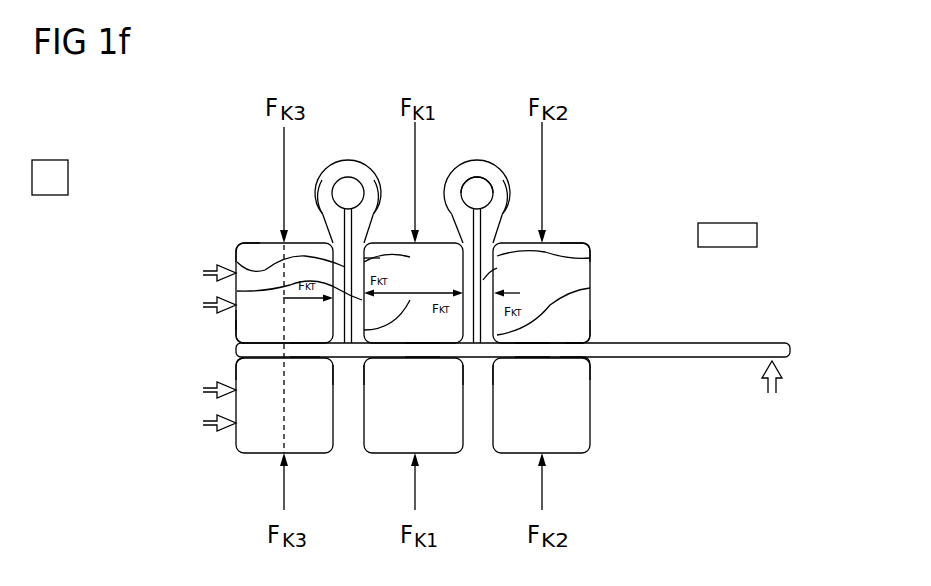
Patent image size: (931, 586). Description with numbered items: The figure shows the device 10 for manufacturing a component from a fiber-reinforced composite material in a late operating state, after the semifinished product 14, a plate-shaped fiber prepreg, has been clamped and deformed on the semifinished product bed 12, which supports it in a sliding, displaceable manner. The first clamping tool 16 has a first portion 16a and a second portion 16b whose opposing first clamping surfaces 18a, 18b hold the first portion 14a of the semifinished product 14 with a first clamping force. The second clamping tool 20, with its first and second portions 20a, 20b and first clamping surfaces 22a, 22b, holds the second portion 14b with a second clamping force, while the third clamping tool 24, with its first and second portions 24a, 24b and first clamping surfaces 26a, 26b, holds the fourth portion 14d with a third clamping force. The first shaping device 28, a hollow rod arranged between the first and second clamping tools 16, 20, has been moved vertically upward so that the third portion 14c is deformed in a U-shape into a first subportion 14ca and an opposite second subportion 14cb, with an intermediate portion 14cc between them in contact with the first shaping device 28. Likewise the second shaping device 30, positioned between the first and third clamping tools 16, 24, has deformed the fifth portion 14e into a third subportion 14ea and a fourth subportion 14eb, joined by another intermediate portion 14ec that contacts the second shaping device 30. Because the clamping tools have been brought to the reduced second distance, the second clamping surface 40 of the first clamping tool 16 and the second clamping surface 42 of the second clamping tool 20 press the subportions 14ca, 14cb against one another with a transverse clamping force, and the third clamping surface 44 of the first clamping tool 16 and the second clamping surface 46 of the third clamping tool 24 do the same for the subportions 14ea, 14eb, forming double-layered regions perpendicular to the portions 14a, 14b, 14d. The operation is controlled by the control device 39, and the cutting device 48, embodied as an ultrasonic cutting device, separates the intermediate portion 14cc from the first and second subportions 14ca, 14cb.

The device 10 is at (636, 166).
The semifinished product bed 12 is at (800, 372).
The semifinished product 14 is at (777, 342).
The first portion of the semifinished product 14a is at (423, 360).
The second portion of the semifinished product 14b is at (532, 357).
The third portion of the semifinished product 14c is at (492, 167).
The first subportion 14ca is at (568, 258).
The second subportion 14cb is at (590, 286).
The intermediate portion 14cc is at (478, 176).
The fourth portion of the semifinished product 14d is at (303, 345).
The fifth portion of the semifinished product 14e is at (363, 162).
The third subportion 14ea is at (247, 263).
The fourth subportion 14eb is at (237, 291).
The intermediate portion 14ec is at (328, 170).
The first clamping tool 16 is at (426, 230).
The first portion of the first clamping tool 16a is at (400, 232).
The second portion of the first clamping tool 16b is at (443, 450).
The first clamping surface of the first clamping tool 18a is at (472, 375).
The first clamping surface of the first clamping tool 18b is at (393, 350).
The second clamping tool 20 is at (576, 230).
The first portion of the second clamping tool 20a is at (590, 253).
The second portion of the second clamping tool 20b is at (580, 438).
The first clamping surface of the second clamping tool 22a is at (588, 330).
The first clamping surface of the second clamping tool 22b is at (570, 355).
The third clamping tool 24 is at (297, 230).
The first portion of the third clamping tool 24a is at (248, 243).
The second portion of the third clamping tool 24b is at (313, 440).
The first clamping surface of the third clamping tool 26a is at (237, 337).
The first clamping surface of the third clamping tool 26b is at (237, 357).
The first shaping device 28 is at (475, 162).
The second shaping device 30 is at (347, 160).
The control device 39 is at (53, 197).
The second clamping surface of the first clamping tool 40 is at (455, 338).
The second clamping surface of the second clamping tool 42 is at (497, 268).
The third clamping surface of the first clamping tool 44 is at (366, 258).
The second clamping surface of the third clamping tool 46 is at (333, 328).
The cutting device 48 is at (740, 236).